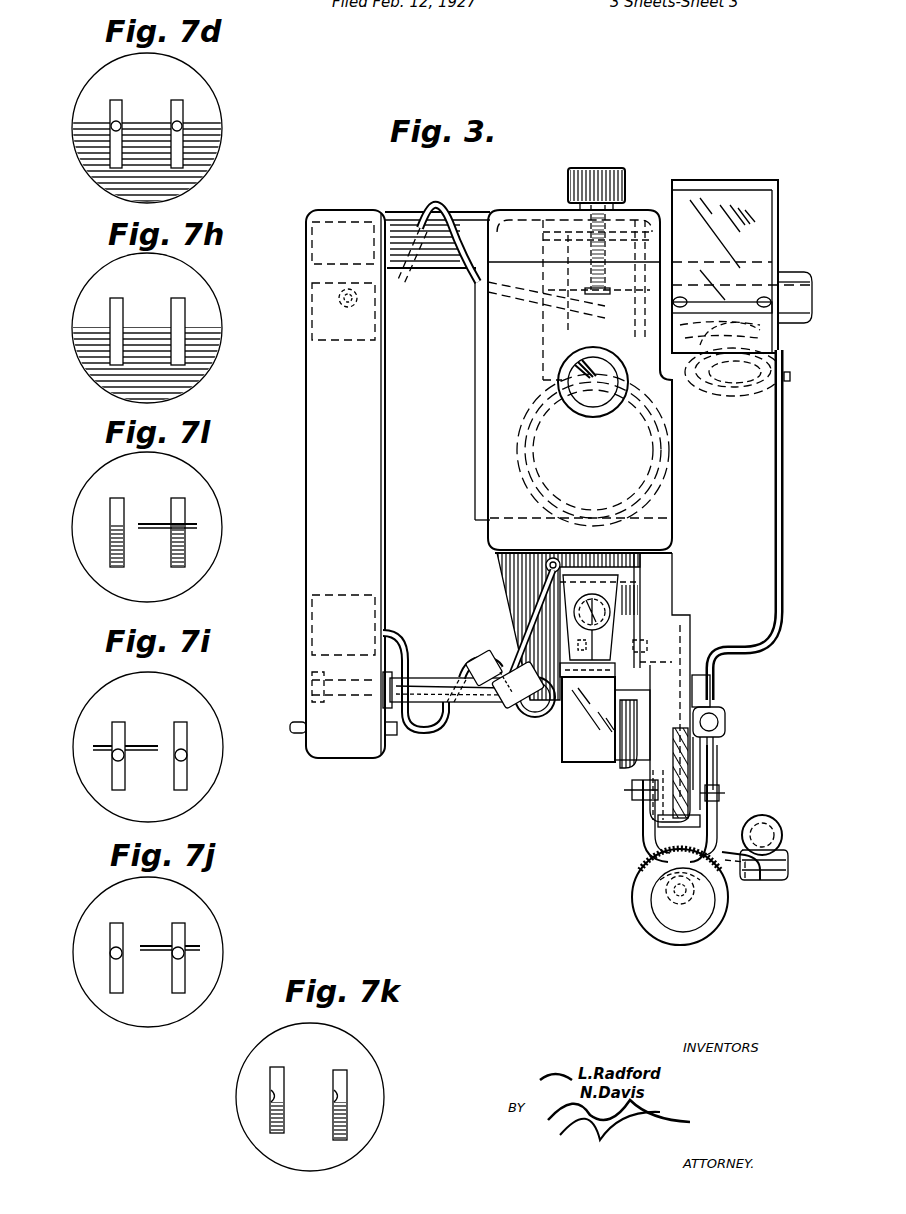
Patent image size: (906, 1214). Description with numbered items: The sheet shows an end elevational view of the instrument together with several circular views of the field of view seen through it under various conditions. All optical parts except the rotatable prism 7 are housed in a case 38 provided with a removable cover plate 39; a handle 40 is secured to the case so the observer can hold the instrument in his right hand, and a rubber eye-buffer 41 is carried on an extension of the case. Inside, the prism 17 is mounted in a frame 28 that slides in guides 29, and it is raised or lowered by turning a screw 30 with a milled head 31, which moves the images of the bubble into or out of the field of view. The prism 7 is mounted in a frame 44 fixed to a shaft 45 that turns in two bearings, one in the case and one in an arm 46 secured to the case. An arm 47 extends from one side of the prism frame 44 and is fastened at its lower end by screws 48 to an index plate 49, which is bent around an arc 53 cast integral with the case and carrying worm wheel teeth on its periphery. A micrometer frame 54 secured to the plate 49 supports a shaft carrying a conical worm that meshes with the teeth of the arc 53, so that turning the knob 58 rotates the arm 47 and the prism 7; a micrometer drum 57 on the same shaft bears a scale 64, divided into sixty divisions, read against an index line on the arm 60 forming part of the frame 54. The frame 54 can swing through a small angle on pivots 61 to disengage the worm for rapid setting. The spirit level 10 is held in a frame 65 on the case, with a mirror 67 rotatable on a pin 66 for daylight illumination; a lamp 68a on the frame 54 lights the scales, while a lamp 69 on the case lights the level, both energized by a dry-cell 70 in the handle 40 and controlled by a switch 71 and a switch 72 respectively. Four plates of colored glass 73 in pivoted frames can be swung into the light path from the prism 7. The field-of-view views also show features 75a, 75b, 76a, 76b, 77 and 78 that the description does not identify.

In FIG. 3, the prism 7 is at (740, 215).
In FIG. 3, the spirit level 10 is at (605, 612).
In FIG. 3, the prism 17 is at (560, 342).
In FIG. 3, the frame 28 is at (548, 312).
In FIG. 3, the guides 29 is at (656, 252).
In FIG. 3, the screw 30 is at (548, 250).
In FIG. 3, the milled head 31 is at (610, 168).
In FIG. 3, the case 38 is at (488, 520).
In FIG. 3, the removable cover plate 39 is at (475, 485).
In FIG. 3, the handle 40 is at (370, 568).
In FIG. 3, the rubber eye-buffer 41 is at (680, 470).
In FIG. 3, the frame 44 is at (778, 225).
In FIG. 3, the shaft 45 is at (748, 292).
In FIG. 3, the arm 46 is at (795, 323).
In FIG. 3, the arm 47 is at (786, 505).
In FIG. 3, the screws 48 is at (712, 696).
In FIG. 3, the index plate 49 is at (713, 777).
In FIG. 3, the arc 53 is at (688, 766).
In FIG. 3, the micrometer frame 54 is at (643, 838).
In FIG. 3, the micrometer drum 57 is at (648, 905).
In FIG. 3, the knob 58 is at (690, 930).
In FIG. 3, the arm 60 is at (728, 895).
In FIG. 3, the pivots 61 is at (624, 800).
In FIG. 3, the scale 64 is at (648, 878).
In FIG. 3, the frame 65 is at (607, 637).
In FIG. 3, the pin 66 is at (560, 660).
In FIG. 3, the mirror 67 is at (575, 738).
In FIG. 3, the lamp 68a is at (780, 822).
In FIG. 3, the lamp 69 is at (540, 718).
In FIG. 3, the dry-cell 70 is at (380, 402).
In FIG. 3, the switch 71 is at (358, 304).
In FIG. 3, the switch 72 is at (298, 733).
In FIG. 3, the plates of colored glass 73 is at (783, 385).
In FIG. 7D, the electrode 75a is at (115, 100).
In FIG. 7H, the electrode 75a is at (110, 298).
In FIG. 7L, the electrode 75a is at (110, 503).
In FIG. 7I, the electrode 75a is at (120, 722).
In FIG. 7J, the electrode 75a is at (116, 923).
In FIG. 7K, the electrode 75a is at (282, 1060).
In FIG. 7D, the electrode 75b is at (180, 104).
In FIG. 7H, the electrode 75b is at (180, 296).
In FIG. 7L, the electrode 75b is at (188, 496).
In FIG. 7I, the electrode 75b is at (180, 722).
In FIG. 7J, the electrode 75b is at (176, 921).
In FIG. 7K, the electrode 75b is at (340, 1068).
In FIG. 7D, the hole 76a is at (114, 130).
In FIG. 7I, the hole 76a is at (116, 762).
In FIG. 7J, the hole 76a is at (114, 960).
In FIG. 7K, the hole 76a is at (270, 1097).
In FIG. 7I, the hole 76b is at (188, 757).
In FIG. 7J, the hole 76b is at (185, 954).
In FIG. 7K, the hole 76b is at (342, 1096).
In FIG. 7D, the liquid 77 is at (205, 129).
In FIG. 7H, the liquid 77 is at (200, 330).
In FIG. 7L, the liquid 77 is at (118, 545).
In FIG. 7K, the liquid 77 is at (345, 1110).
In FIG. 7L, the bridge plate 78 is at (190, 521).
In FIG. 7I, the bridge plate 78 is at (100, 744).
In FIG. 7J, the bridge plate 78 is at (198, 940).